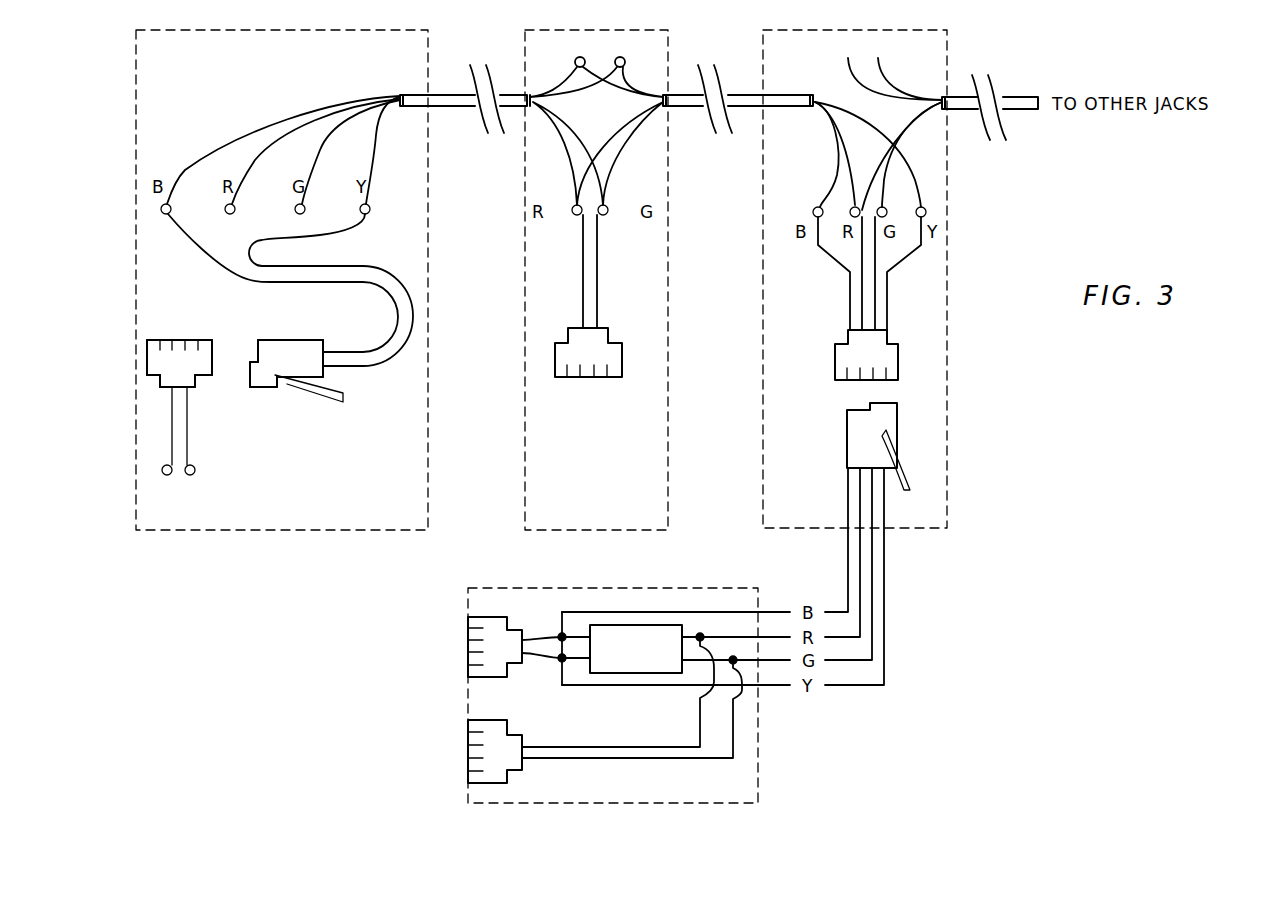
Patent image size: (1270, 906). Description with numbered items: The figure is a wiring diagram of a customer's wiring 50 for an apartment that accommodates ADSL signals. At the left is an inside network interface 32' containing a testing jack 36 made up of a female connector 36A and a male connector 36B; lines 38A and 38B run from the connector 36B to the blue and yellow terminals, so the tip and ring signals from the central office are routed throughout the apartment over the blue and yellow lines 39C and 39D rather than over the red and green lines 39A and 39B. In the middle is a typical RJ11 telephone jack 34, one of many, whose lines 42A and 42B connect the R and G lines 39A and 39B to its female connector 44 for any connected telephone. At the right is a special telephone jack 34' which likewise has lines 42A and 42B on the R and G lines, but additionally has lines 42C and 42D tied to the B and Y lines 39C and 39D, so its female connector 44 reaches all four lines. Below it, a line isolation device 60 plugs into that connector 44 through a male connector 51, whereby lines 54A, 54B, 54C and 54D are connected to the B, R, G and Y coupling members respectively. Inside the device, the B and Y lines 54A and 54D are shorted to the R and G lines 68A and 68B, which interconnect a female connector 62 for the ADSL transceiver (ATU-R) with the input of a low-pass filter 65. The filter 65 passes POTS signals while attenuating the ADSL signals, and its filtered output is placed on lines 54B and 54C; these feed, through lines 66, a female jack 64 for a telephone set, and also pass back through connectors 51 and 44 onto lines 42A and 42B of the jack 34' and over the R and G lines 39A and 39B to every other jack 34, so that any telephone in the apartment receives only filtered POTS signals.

The inside network interface 32' is at (282, 313).
The telephone jack 34 is at (580, 300).
The telephone jack 34' is at (888, 279).
The testing jack 36 is at (222, 398).
The female connector 36A is at (183, 340).
The male connector 36B is at (300, 340).
The line 38A is at (228, 270).
The line 38B is at (305, 267).
The R line 39A is at (250, 158).
The G line 39B is at (322, 155).
The B line 39C is at (185, 170).
The Y line 39D is at (380, 148).
The line 42A is at (583, 300).
The line 42B is at (597, 292).
The line 42C is at (818, 247).
The line 42D is at (913, 250).
The female connector 44 is at (590, 377).
The customer's wiring 50 is at (1092, 396).
The male connector 51 is at (890, 420).
The B line 54A is at (847, 560).
The R line 54B is at (862, 555).
The G line 54C is at (874, 593).
The Y line 54D is at (886, 650).
The line isolation device 60 is at (760, 778).
The female connector 62 is at (468, 628).
The female jack 64 is at (468, 767).
The low-pass filter 65 is at (660, 625).
The lines 66 is at (620, 746).
The R line 68A is at (530, 638).
The G line 68B is at (536, 652).